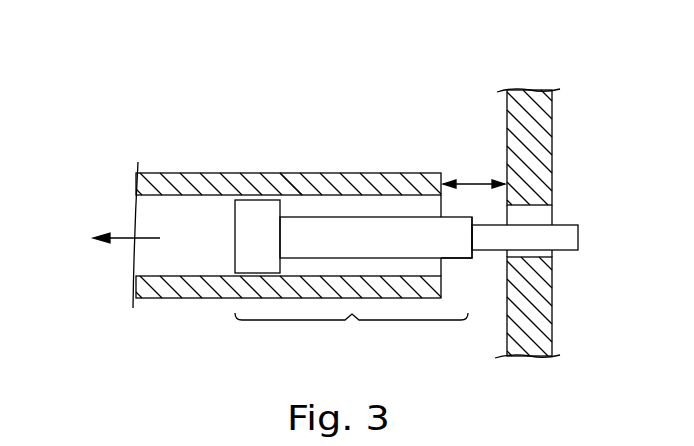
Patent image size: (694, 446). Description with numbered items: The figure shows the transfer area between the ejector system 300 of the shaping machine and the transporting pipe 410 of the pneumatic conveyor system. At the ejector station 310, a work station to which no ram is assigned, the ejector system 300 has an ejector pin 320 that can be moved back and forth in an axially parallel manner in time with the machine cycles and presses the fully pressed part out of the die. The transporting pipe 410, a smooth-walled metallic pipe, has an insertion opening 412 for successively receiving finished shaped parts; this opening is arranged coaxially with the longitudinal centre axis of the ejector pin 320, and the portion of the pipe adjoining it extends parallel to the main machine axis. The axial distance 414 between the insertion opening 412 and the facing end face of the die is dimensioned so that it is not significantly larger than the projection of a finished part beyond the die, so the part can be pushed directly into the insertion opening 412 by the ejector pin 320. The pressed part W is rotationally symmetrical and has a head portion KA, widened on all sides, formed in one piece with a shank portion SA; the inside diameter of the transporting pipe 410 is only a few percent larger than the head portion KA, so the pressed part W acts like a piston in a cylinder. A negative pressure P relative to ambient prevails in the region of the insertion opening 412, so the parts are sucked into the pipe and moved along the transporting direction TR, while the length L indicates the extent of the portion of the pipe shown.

The ejector station 310 is at (463, 74).
The ejector pin 320 is at (558, 233).
The ejector system 300 is at (566, 289).
The transporting pipe 410 is at (205, 288).
The insertion opening 412 is at (455, 260).
The axial distance 414 is at (472, 182).
The head portion KA is at (253, 210).
The pressed part W is at (288, 185).
The shank portion SA is at (326, 230).
The transporting direction TR is at (120, 232).
The negative pressure P is at (152, 258).
The length L is at (351, 338).